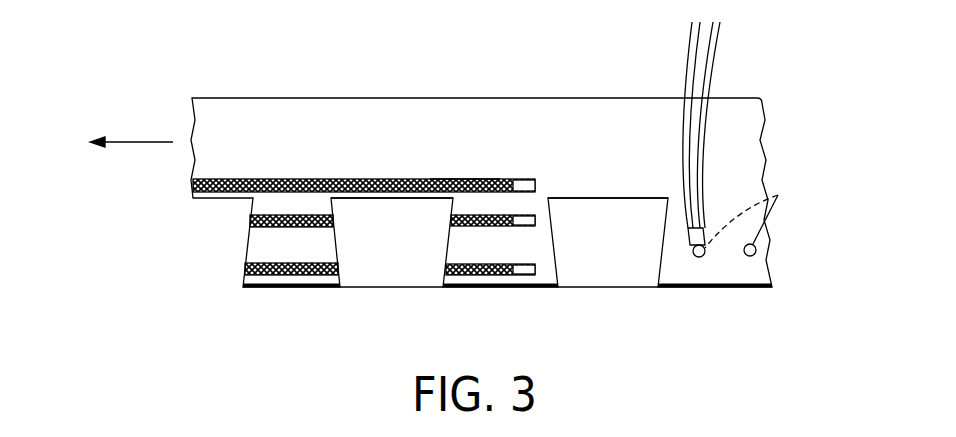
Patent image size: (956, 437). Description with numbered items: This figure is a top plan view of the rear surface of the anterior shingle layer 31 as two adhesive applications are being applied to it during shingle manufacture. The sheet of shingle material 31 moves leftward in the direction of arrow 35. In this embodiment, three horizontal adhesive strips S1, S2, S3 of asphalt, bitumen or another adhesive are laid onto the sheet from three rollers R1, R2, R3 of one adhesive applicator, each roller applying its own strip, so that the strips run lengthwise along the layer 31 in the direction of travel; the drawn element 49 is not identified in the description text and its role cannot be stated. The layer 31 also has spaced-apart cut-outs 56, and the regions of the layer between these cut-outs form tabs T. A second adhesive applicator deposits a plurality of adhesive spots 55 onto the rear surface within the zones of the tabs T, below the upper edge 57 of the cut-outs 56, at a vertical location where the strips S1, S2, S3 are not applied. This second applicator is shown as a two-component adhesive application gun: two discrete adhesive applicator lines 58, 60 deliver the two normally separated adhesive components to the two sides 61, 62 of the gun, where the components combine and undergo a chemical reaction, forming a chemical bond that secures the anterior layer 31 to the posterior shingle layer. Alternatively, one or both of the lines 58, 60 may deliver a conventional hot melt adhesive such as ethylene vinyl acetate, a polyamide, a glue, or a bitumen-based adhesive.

The anterior shingle layer 31 is at (738, 120).
The direction arrow 35 is at (152, 142).
The conductive strip 49 is at (287, 180).
The adhesive spots 55 is at (778, 195).
The cut-outs 56 is at (377, 258).
The upper edge of the cut-outs 57 is at (420, 202).
The adhesive applicator line 58 is at (685, 55).
The adhesive applicator line 60 is at (708, 62).
The side of adhesive applicator gun 61 is at (694, 246).
The side of adhesive applicator gun 62 is at (704, 233).
The adhesive strip S1 is at (472, 274).
The adhesive strip S2 is at (487, 226).
The adhesive strip S3 is at (480, 180).
The roller R1 is at (530, 270).
The roller R2 is at (533, 219).
The roller R3 is at (522, 180).
The tabs T is at (713, 270).